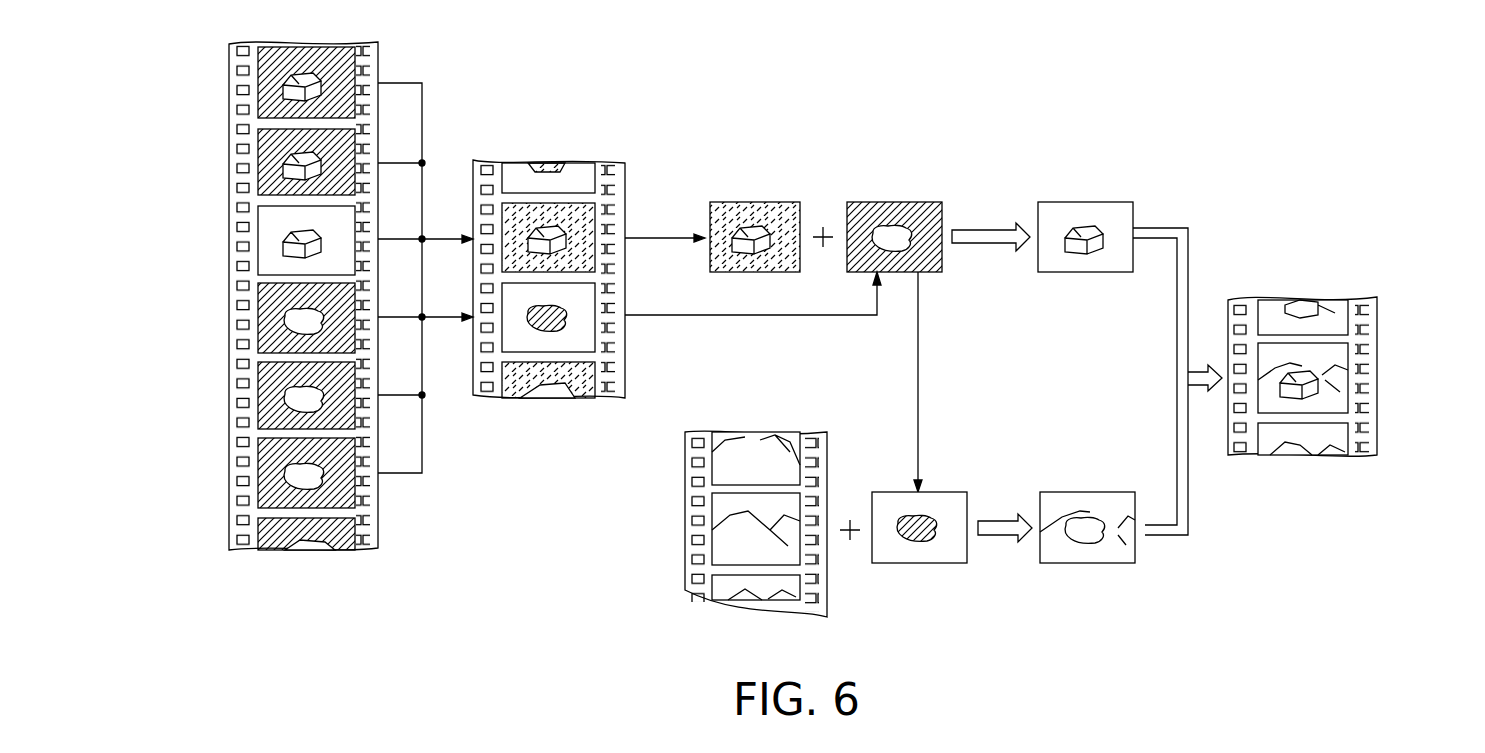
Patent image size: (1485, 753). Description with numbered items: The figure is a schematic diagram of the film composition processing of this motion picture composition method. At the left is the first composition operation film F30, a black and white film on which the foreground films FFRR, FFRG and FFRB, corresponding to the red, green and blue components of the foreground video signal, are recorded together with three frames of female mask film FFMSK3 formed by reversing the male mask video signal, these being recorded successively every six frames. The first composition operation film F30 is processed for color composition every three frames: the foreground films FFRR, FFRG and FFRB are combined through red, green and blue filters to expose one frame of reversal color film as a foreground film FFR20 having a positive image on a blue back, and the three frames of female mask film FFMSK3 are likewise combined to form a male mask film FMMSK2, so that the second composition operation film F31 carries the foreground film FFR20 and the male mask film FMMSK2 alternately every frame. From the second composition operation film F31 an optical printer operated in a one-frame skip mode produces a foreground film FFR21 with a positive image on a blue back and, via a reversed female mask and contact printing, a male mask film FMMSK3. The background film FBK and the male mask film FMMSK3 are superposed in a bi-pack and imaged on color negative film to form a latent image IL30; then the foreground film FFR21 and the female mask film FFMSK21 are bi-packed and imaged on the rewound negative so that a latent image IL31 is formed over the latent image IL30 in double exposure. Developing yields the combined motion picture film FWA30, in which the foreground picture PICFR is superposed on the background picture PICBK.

The first composition operation film F30 is at (282, 296).
The black and white foreground film (red component) FFRR is at (257, 63).
The black and white foreground film (green component) FFRG is at (257, 139).
The black and white foreground film (blue component) FFRB is at (257, 219).
The female mask film FFMSK3 is at (236, 395).
The second composition operation film F31 is at (606, 279).
The foreground film FFR20 is at (596, 220).
The male mask film FMMSK2 is at (583, 338).
The foreground film FFR21 is at (743, 201).
The female mask film FFMSK21 is at (897, 190).
The latent image IL31 is at (1077, 262).
The background film FBK is at (770, 593).
The male mask film FMMSK3 is at (907, 555).
The latent image IL30 is at (1088, 553).
The background picture PICBK is at (1343, 361).
The foreground picture PICFR is at (1333, 388).
The combined motion picture film FWA30 is at (1354, 376).